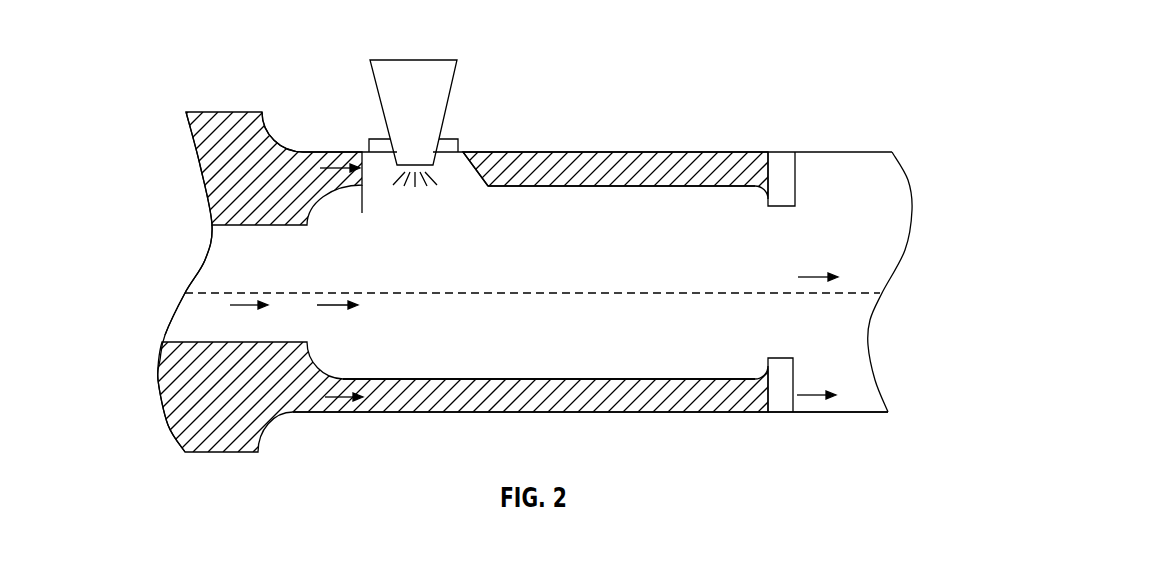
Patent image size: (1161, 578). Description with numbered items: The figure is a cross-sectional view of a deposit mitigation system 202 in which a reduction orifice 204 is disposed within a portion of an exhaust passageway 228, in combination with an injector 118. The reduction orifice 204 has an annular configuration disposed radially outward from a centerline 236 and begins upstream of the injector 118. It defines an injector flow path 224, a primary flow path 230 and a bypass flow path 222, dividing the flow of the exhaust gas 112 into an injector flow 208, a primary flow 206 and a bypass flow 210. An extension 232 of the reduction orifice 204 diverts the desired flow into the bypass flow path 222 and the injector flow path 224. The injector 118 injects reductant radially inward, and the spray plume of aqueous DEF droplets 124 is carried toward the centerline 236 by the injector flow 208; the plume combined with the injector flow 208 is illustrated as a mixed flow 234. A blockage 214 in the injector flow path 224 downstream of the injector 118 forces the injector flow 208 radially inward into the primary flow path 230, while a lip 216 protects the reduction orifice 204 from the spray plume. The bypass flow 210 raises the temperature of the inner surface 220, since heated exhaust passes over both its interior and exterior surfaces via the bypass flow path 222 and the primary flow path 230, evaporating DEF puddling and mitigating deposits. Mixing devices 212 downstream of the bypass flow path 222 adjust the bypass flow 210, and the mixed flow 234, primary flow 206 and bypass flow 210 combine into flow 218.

The exhaust gas 112 is at (250, 308).
The injector 118 is at (378, 92).
The aqueous DEF droplets 124 is at (432, 167).
The deposit mitigation system 202 is at (780, 74).
The reduction orifice 204 is at (225, 202).
The primary flow 206 is at (338, 308).
The injector flow 208 is at (343, 165).
The bypass flow 210 is at (817, 393).
The mixing devices 212 is at (778, 400).
The blockage 214 is at (482, 168).
The lip 216 is at (363, 197).
The flow 218 is at (820, 274).
The inner surface 220 is at (642, 188).
The bypass flow path 222 is at (498, 413).
The injector flow path 224 is at (307, 162).
The exhaust passageway 228 is at (652, 152).
The primary flow path 230 is at (608, 325).
The extension 232 is at (232, 414).
The mixed flow 234 is at (498, 271).
The centerline 236 is at (670, 293).